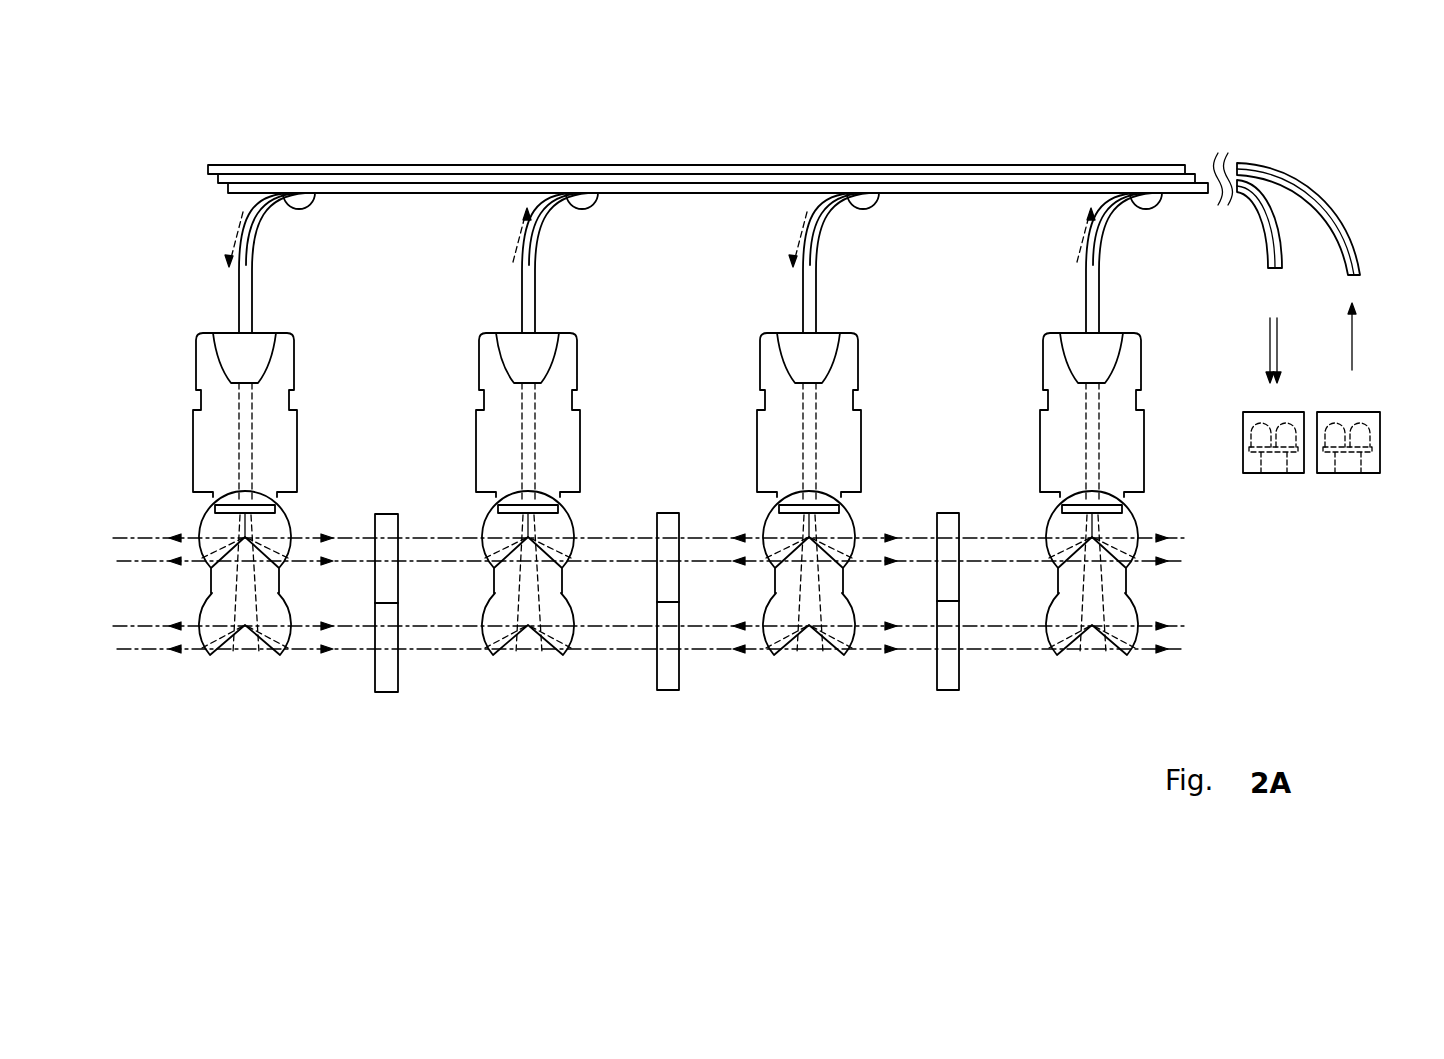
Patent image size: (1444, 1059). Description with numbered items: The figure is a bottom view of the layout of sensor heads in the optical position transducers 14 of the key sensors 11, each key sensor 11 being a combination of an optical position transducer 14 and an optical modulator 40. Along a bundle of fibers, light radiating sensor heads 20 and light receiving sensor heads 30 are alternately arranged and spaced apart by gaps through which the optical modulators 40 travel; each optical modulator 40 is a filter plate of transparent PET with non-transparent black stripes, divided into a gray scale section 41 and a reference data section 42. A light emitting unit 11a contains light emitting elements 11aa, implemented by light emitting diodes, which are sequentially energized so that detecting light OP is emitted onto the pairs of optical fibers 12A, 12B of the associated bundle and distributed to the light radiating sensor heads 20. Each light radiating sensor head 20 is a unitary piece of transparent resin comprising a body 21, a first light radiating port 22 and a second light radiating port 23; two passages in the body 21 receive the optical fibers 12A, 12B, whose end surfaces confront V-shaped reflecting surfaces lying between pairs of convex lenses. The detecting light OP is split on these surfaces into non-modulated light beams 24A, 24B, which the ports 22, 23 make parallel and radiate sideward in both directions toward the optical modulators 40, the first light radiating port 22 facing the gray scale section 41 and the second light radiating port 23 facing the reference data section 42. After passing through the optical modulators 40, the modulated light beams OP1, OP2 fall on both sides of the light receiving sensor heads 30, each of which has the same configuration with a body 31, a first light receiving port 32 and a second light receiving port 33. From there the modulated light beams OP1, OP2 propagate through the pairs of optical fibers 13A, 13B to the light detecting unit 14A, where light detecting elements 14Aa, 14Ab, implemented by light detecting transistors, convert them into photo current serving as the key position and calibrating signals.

The key sensor 11 is at (1228, 82).
The optical position transducer 14 is at (1246, 145).
The optical fiber 12A is at (251, 205).
The optical fiber 12B is at (313, 198).
The optical fiber 13A is at (534, 205).
The optical fiber 13B is at (596, 198).
The light radiating sensor head 20 is at (553, 456).
The body 21 is at (757, 365).
The first light radiating port 22 is at (848, 510).
The second light radiating port 23 is at (853, 600).
The light receiving sensor head 30 is at (786, 456).
The body 31 is at (480, 366).
The first light receiving port 32 is at (568, 510).
The second light receiving port 33 is at (572, 600).
The optical modulator 40 is at (675, 609).
The gray scale section 41 is at (668, 512).
The reference data section 42 is at (680, 677).
The non-modulated light beam 24A is at (718, 558).
The non-modulated light beam 24B is at (735, 652).
The light detecting unit 14A is at (1235, 459).
The light detecting element 14Aa is at (1262, 425).
The light detecting element 14Ab is at (1243, 418).
The light emitting unit 11a is at (1380, 449).
The light emitting element 11aa is at (1372, 433).
The modulated light beam OP1 is at (428, 536).
The modulated light beam OP2 is at (423, 654).
The detecting light OP is at (1352, 330).